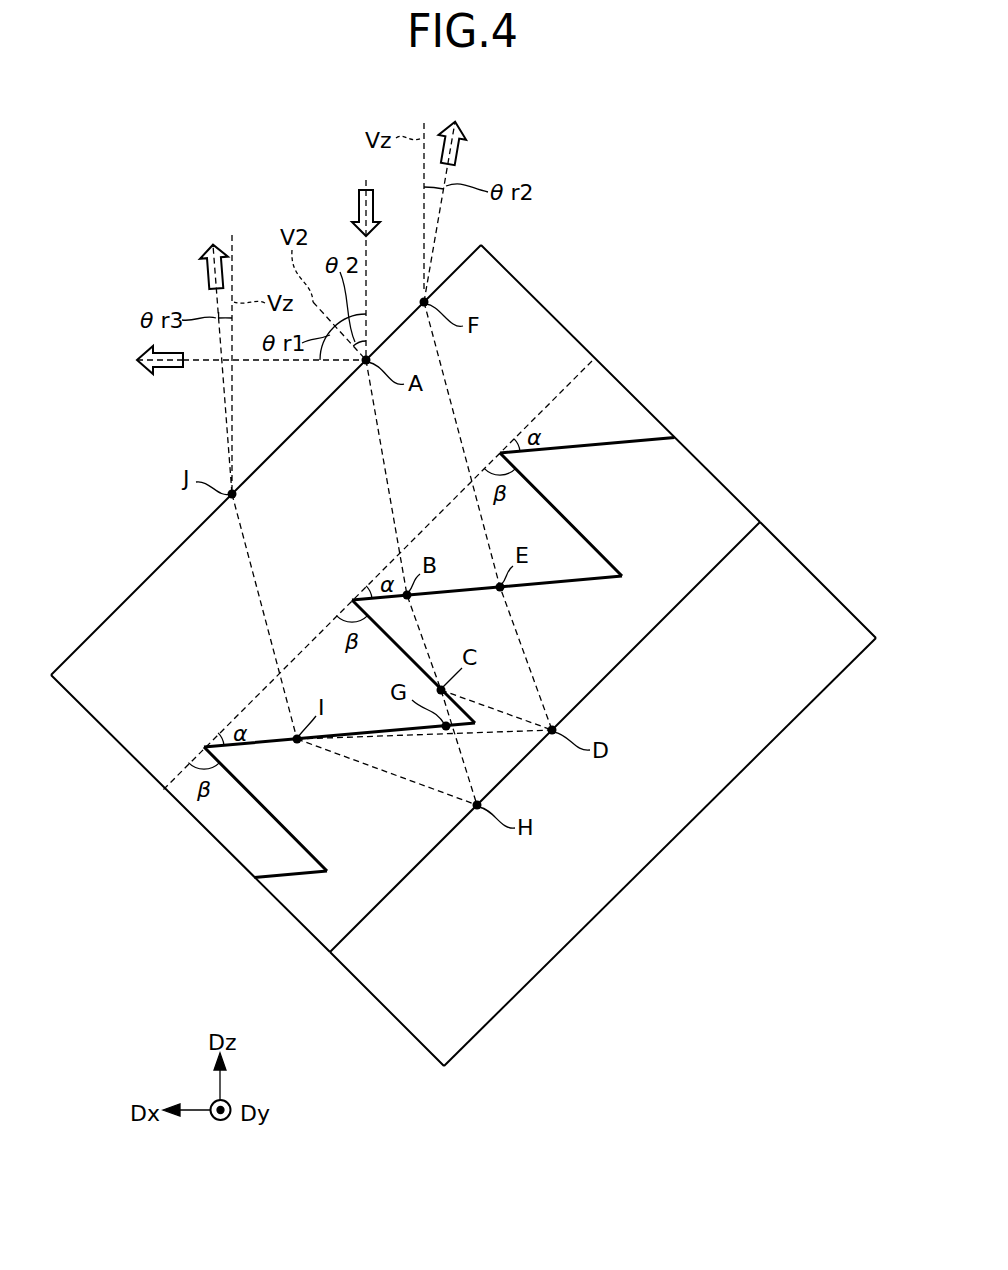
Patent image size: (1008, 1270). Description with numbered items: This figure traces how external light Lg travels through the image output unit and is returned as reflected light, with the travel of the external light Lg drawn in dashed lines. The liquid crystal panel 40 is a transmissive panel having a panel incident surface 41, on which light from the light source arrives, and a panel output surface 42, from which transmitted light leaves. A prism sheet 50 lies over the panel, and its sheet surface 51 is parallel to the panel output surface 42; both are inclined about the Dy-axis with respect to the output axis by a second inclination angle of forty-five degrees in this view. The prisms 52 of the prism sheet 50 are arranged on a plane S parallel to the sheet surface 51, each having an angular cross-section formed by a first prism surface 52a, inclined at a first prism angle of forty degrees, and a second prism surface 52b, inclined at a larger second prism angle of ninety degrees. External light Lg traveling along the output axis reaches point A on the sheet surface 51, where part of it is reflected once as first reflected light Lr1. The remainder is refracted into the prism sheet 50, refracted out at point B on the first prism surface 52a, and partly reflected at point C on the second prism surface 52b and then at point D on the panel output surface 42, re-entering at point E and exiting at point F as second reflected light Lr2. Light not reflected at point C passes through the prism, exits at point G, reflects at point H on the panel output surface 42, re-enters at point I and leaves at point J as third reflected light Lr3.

The liquid crystal panel 40 is at (777, 647).
The panel incident surface 41 is at (810, 704).
The panel output surface 42 is at (735, 547).
The prism sheet 50 is at (161, 704).
The sheet surface 51 is at (150, 576).
The prism 52 is at (421, 717).
The first prism surface 52a is at (578, 583).
The second prism surface 52b is at (580, 531).
The plane S is at (242, 711).
The external light Lg is at (357, 207).
The first reflected light Lr1 is at (175, 378).
The second reflected light Lr2 is at (461, 150).
The third reflected light Lr3 is at (205, 283).